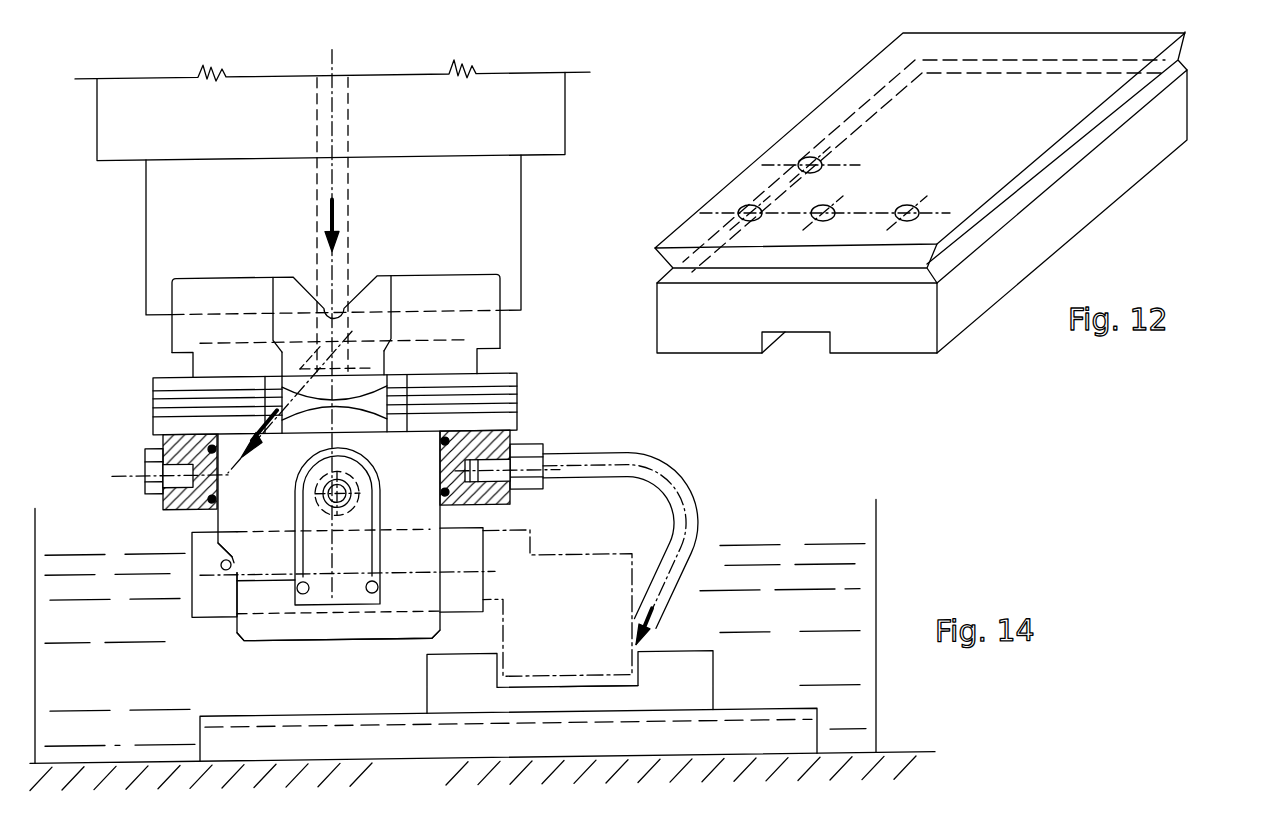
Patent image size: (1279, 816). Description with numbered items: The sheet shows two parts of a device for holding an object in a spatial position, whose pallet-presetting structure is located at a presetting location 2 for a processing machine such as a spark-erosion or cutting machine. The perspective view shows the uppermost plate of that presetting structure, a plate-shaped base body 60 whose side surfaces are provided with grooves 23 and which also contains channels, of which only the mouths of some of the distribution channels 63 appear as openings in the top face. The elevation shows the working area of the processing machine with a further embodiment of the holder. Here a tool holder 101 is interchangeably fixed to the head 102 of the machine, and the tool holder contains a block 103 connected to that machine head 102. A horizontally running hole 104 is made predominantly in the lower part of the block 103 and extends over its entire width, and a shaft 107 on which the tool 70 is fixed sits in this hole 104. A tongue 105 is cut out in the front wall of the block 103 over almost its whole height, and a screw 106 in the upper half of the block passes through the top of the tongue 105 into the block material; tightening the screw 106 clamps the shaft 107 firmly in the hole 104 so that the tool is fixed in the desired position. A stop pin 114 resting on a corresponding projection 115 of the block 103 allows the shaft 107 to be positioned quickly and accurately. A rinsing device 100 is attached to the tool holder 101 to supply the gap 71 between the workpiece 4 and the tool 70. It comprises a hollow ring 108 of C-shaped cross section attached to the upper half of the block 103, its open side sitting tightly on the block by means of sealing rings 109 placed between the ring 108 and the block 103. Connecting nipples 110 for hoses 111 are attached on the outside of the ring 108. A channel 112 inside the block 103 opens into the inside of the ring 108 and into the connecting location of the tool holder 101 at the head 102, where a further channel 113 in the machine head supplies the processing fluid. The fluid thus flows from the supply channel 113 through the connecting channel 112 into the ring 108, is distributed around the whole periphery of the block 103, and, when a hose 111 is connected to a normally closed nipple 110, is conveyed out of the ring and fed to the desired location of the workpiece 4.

In FIG. 14, the presetting location 2 is at (440, 789).
In FIG. 14, the workpiece 4 is at (670, 678).
In FIG. 12, the grooves 23 is at (1117, 120).
In FIG. 12, the base body 60 is at (718, 165).
In FIG. 12, the distribution channels 63 is at (909, 203).
In FIG. 14, the tool 70 is at (604, 634).
In FIG. 14, the gap 71 is at (610, 676).
In FIG. 14, the rinsing device 100 is at (162, 447).
In FIG. 14, the tool holder 101 is at (217, 515).
In FIG. 14, the head 102 is at (145, 205).
In FIG. 14, the block 103 is at (293, 650).
In FIG. 14, the hole 104 is at (229, 548).
In FIG. 14, the tongue 105 is at (362, 599).
In FIG. 14, the screw 106 is at (280, 484).
In FIG. 14, the shaft 107 is at (222, 614).
In FIG. 14, the hollow ring 108 is at (160, 498).
In FIG. 14, the sealing rings 109 is at (160, 443).
In FIG. 14, the connecting nipples 110 is at (143, 453).
In FIG. 14, the hoses 111 is at (633, 455).
In FIG. 14, the channel 112 is at (231, 474).
In FIG. 14, the channel 113 is at (359, 222).
In FIG. 14, the stop pin 114 is at (233, 533).
In FIG. 14, the projection 115 is at (223, 567).